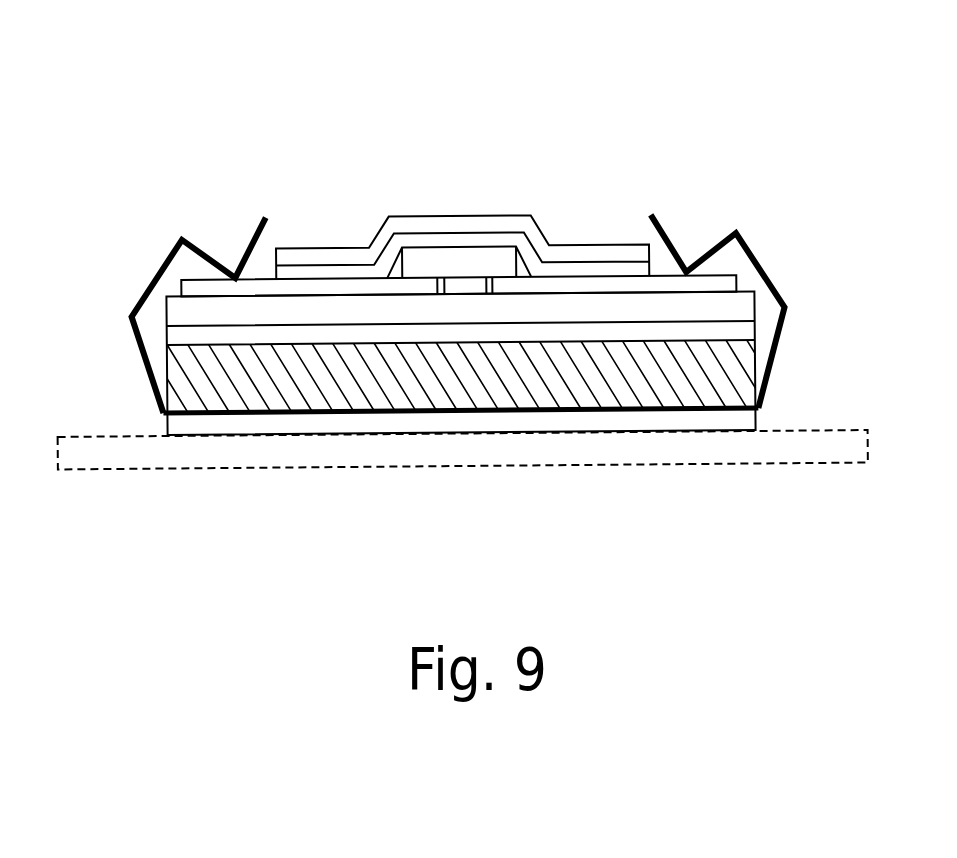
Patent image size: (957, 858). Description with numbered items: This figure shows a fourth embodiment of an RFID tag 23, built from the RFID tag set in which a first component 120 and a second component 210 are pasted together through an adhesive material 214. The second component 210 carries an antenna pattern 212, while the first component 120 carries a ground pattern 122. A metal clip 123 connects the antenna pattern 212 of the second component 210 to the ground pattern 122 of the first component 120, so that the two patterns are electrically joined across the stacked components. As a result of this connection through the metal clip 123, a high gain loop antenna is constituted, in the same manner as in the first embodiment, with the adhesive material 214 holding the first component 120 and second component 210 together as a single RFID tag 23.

The RFID tag 23 is at (494, 129).
The first component 120 is at (792, 340).
The ground pattern 122 is at (287, 411).
The metal clip 123 is at (165, 262).
The second component 210 is at (554, 213).
The antenna pattern 212 is at (313, 284).
The adhesive material 214 is at (345, 336).